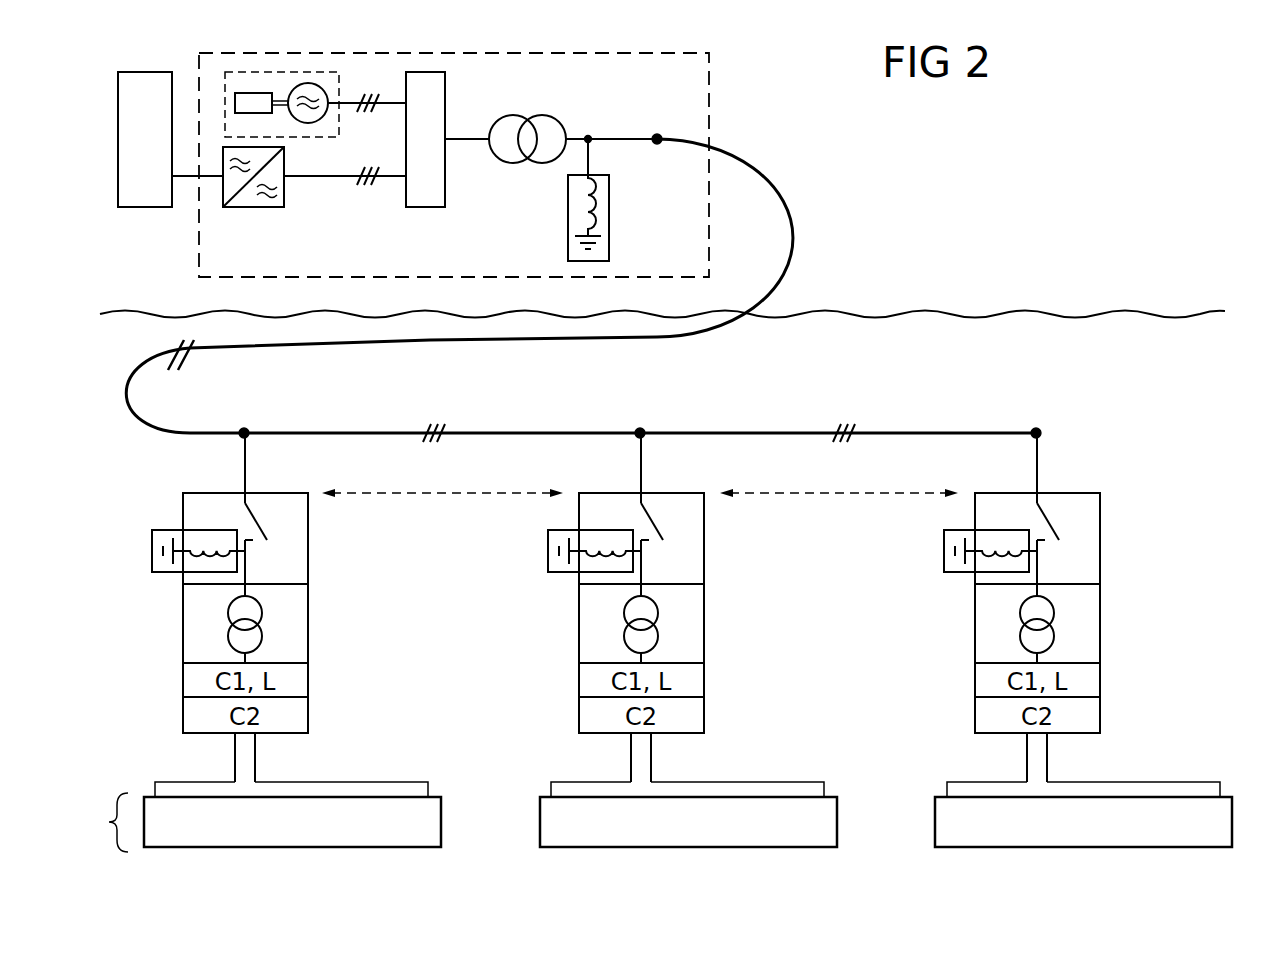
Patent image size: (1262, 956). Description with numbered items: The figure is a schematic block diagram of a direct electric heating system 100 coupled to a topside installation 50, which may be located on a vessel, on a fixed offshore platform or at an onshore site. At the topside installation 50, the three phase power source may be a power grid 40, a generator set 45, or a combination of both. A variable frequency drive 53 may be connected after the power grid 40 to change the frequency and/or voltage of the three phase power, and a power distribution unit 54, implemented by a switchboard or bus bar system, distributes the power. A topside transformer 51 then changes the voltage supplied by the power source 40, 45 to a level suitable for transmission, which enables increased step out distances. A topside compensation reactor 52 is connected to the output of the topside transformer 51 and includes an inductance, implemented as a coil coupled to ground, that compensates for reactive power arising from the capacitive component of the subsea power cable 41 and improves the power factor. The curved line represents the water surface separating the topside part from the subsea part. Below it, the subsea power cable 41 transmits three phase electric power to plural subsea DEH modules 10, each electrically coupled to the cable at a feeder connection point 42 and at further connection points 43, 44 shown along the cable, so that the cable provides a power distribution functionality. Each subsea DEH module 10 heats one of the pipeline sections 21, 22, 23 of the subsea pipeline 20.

The direct electric heating system 100 is at (1116, 128).
The subsea DEH module 10 is at (375, 640).
The subsea pipeline 20 is at (102, 822).
The pipeline section 21 is at (441, 807).
The pipeline section 22 is at (837, 809).
The pipeline section 23 is at (935, 840).
The power grid 40 is at (145, 207).
The subsea power cable 41 is at (365, 430).
The feeder connection point 42 is at (245, 428).
The connection node 43 is at (641, 428).
The connection node 44 is at (1037, 428).
The generator set 45 is at (340, 87).
The topside installation 50 is at (710, 110).
The topside transformer 51 is at (545, 115).
The topside compensation reactor 52 is at (568, 212).
The variable frequency drive 53 is at (253, 207).
The power distribution unit 54 is at (425, 207).